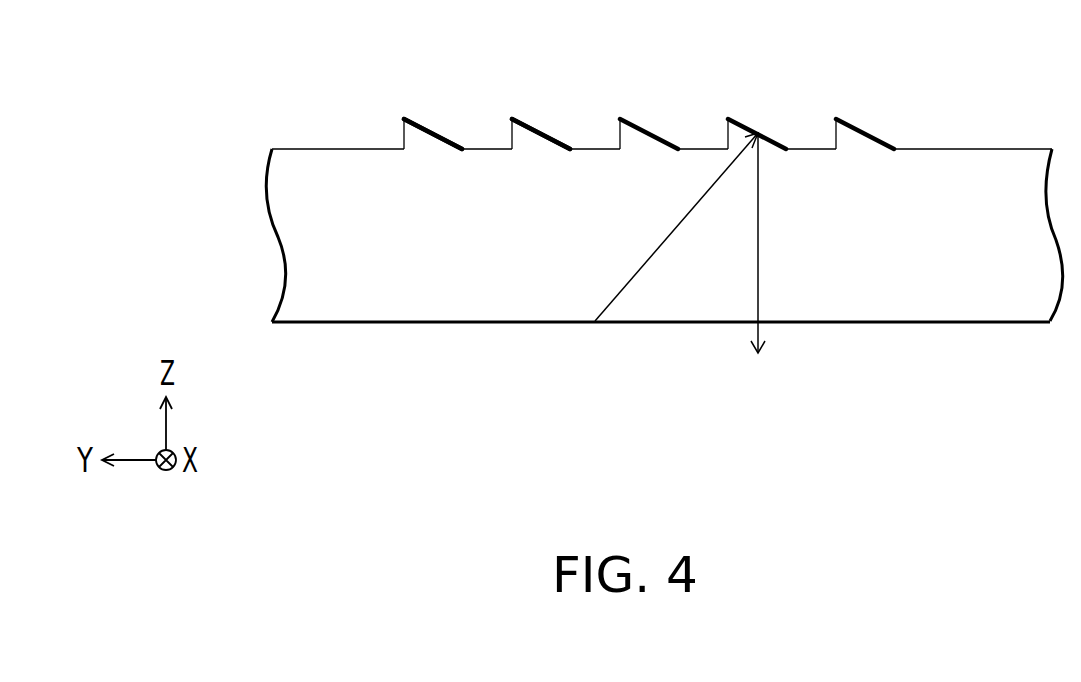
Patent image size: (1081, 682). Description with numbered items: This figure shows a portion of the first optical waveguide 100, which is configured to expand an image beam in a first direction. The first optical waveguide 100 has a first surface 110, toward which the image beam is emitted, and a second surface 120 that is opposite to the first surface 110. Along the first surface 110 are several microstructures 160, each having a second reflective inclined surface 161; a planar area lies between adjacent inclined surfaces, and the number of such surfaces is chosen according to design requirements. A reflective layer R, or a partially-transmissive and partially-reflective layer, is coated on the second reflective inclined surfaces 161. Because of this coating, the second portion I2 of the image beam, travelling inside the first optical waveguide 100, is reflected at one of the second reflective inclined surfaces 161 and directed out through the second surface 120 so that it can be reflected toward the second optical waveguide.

The first optical waveguide 100 is at (298, 237).
The first surface 110 is at (306, 136).
The second surface 120 is at (367, 325).
The microstructures 160 is at (435, 133).
The second reflective inclined surfaces 161 is at (413, 125).
The reflective layer R is at (543, 132).
The second portion of the image beam I2 is at (757, 283).